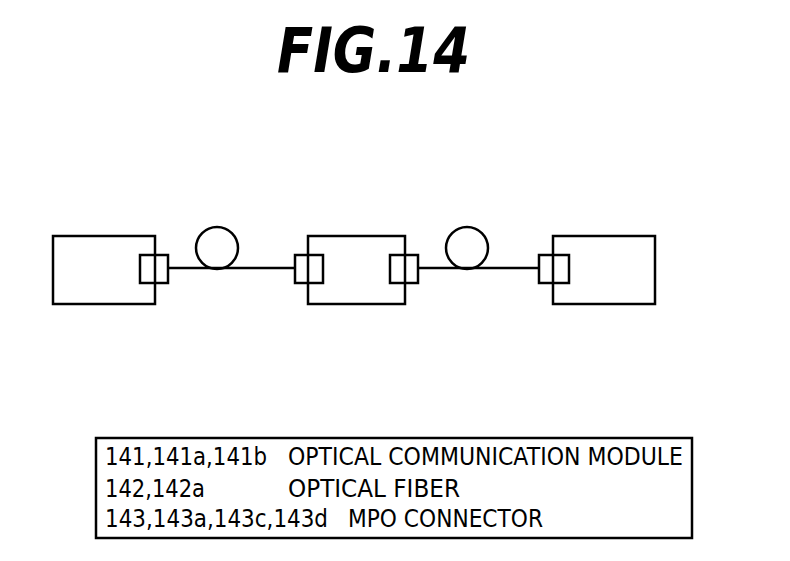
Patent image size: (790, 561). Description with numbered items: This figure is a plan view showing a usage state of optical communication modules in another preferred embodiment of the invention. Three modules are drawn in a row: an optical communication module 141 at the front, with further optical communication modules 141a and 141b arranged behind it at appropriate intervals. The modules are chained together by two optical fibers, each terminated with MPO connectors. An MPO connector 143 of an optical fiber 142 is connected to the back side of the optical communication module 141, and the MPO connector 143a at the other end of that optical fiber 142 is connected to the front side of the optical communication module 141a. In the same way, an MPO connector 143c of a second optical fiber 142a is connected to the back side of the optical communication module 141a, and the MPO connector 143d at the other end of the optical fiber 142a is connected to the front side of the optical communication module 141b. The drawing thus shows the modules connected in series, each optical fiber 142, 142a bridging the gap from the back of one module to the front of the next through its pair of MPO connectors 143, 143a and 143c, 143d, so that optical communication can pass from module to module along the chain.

The optical communication module 141 is at (92, 236).
The optical communication module 141a is at (345, 236).
The optical communication module 141b is at (598, 236).
The optical fiber 142 is at (221, 227).
The optical fiber 142a is at (470, 227).
The MPO connector 143 is at (165, 285).
The MPO connector 143a is at (300, 284).
The MPO connector 143c is at (413, 285).
The MPO connector 143d is at (542, 285).